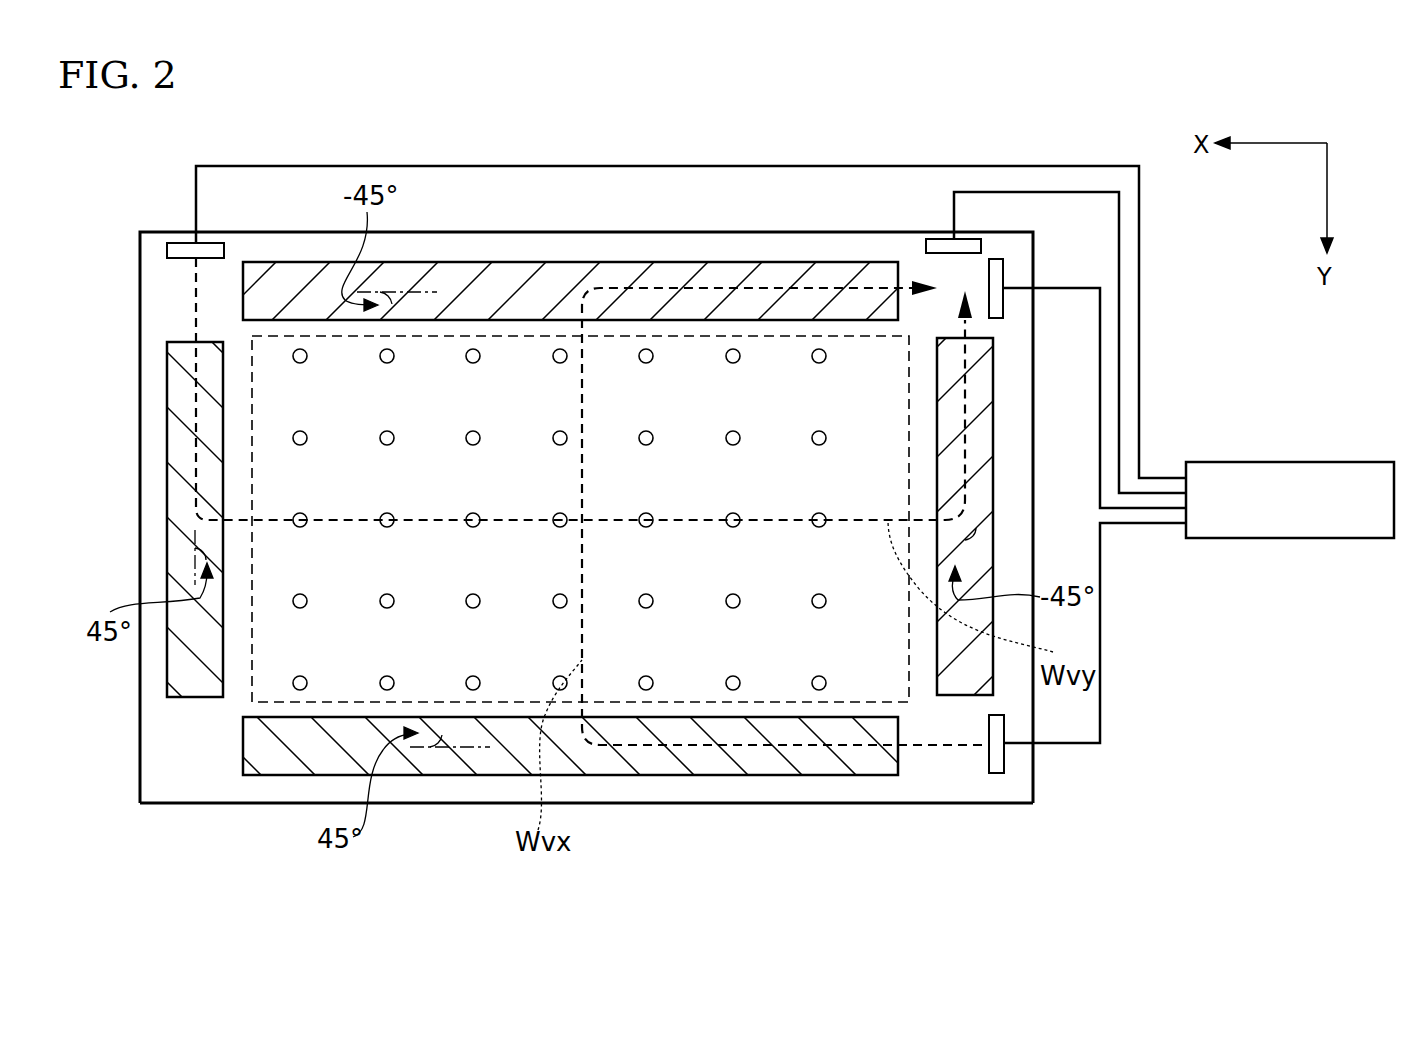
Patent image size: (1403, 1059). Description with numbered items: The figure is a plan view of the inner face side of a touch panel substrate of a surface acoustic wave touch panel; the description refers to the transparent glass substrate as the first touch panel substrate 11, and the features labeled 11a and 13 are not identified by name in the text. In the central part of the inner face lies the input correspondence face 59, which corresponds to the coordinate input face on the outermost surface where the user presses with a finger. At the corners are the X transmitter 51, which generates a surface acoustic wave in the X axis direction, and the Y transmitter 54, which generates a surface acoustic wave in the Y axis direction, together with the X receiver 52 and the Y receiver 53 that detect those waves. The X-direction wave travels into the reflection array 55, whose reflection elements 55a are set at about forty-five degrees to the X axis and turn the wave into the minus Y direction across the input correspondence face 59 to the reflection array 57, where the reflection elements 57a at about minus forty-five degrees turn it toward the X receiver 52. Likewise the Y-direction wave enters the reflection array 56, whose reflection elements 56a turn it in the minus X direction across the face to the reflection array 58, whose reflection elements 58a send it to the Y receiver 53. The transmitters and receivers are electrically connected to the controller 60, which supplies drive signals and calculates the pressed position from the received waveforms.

The first touch panel substrate 11 is at (140, 718).
The inner surface of housing 11a is at (162, 768).
The nozzles 13 is at (293, 690).
The X transmitter 51 is at (995, 773).
The X receiver 52 is at (1003, 303).
The Y receiver 53 is at (982, 247).
The Y transmitter 54 is at (167, 250).
The reflection array 55 is at (623, 777).
The reflection element 55a is at (462, 765).
The reflection array 56 is at (167, 675).
The reflection element 56a is at (178, 540).
The reflection array 57 is at (518, 262).
The reflection element 57a is at (416, 276).
The reflection array 58 is at (993, 418).
The reflection element 58a is at (993, 527).
The input correspondence face 59 is at (310, 334).
The controller 60 is at (1275, 538).